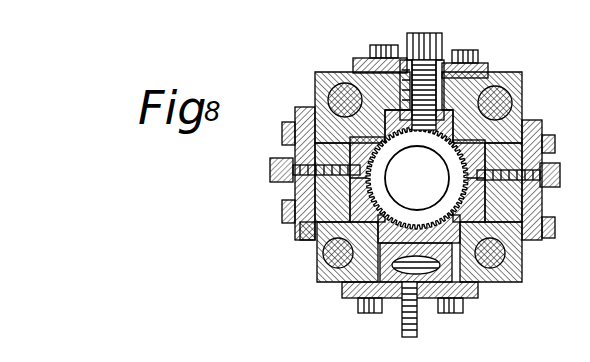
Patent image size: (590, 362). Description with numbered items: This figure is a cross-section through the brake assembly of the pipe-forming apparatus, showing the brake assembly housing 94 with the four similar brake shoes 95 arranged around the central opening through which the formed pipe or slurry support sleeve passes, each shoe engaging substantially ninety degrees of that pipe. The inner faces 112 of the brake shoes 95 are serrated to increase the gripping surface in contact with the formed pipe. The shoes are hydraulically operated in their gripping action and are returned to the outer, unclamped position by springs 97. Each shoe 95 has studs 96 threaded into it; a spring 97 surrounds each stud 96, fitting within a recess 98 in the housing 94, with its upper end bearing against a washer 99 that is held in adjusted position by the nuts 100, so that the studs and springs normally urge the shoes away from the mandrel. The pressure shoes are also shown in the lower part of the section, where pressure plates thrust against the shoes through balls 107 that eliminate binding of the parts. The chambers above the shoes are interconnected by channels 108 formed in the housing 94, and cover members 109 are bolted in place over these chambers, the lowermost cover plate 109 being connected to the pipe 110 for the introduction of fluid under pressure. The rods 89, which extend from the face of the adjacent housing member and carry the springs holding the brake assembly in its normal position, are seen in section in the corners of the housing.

The rods 89 is at (318, 95).
The brake assembly housing 94 is at (524, 108).
The brake shoes 95 is at (470, 79).
The studs 96 is at (441, 70).
The springs 97 is at (470, 60).
The recess 98 is at (372, 90).
The washer 99 is at (410, 55).
The nuts 100 is at (432, 44).
The balls 107 is at (316, 250).
The channels 108 is at (492, 284).
The cover members 109 is at (342, 291).
The pipe 110 is at (420, 325).
The inner faces 112 is at (298, 230).